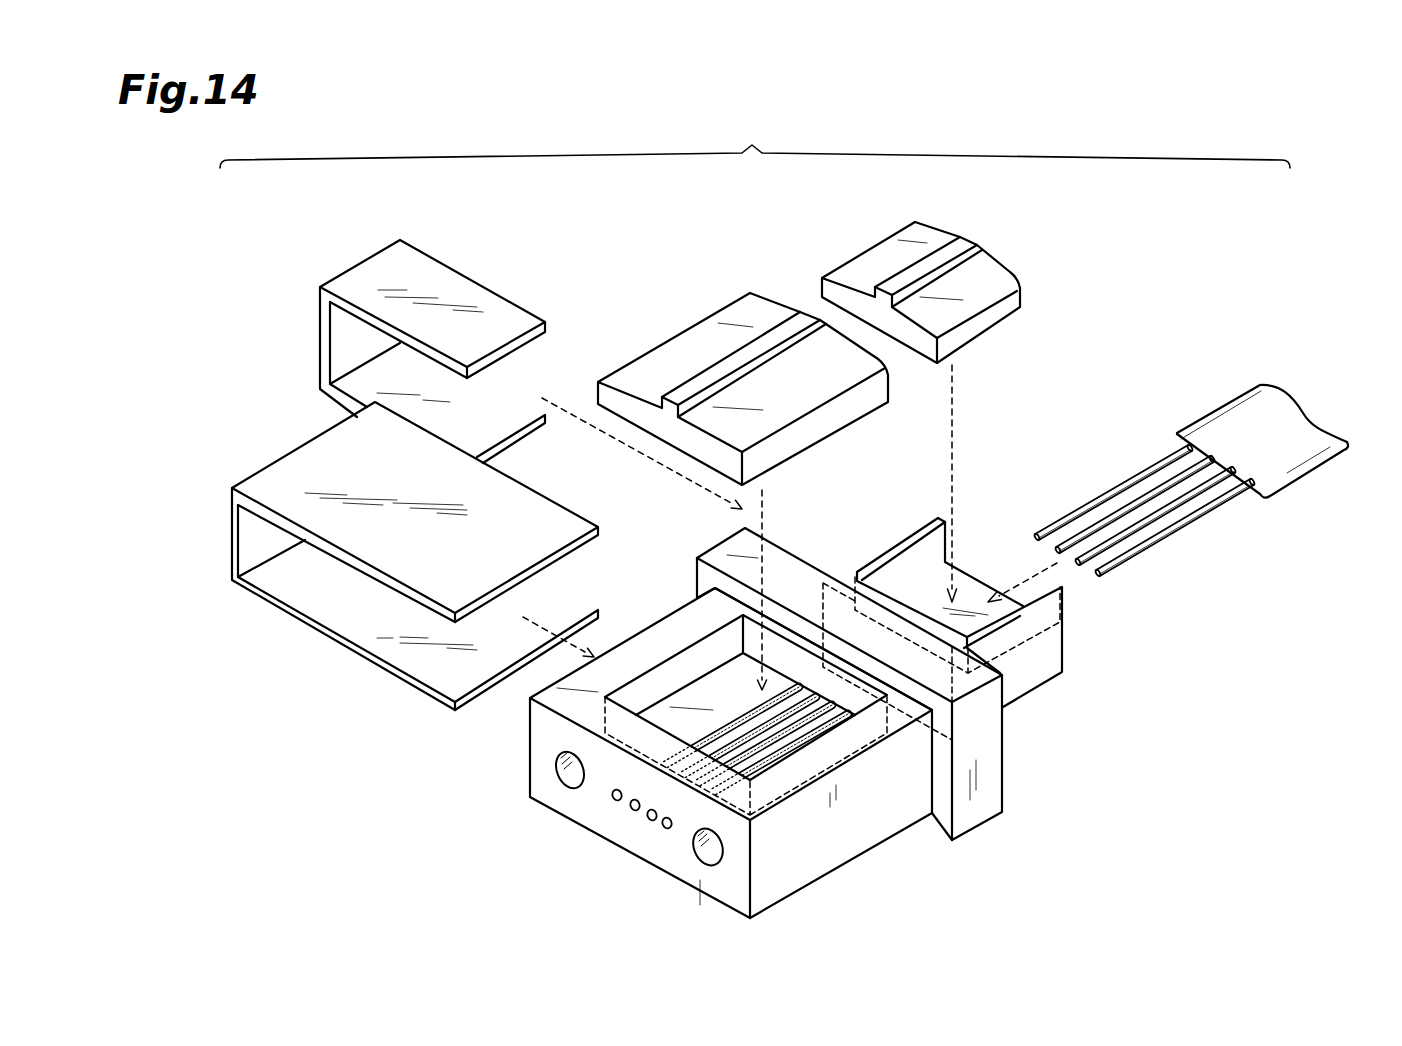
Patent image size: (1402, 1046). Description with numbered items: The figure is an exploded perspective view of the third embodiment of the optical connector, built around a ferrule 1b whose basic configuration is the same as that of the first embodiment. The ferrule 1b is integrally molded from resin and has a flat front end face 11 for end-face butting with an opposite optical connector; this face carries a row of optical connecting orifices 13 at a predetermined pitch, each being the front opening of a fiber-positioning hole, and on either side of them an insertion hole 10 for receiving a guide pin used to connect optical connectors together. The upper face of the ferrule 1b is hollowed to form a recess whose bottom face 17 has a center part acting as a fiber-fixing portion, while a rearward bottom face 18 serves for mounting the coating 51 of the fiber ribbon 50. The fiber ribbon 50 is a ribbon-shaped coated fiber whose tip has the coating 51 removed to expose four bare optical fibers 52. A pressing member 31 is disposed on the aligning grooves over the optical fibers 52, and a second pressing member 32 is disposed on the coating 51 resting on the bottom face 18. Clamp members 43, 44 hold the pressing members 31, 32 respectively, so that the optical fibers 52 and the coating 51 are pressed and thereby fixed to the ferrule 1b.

The ferrule 1b is at (927, 655).
The insertion hole 10 is at (707, 858).
The front end face 11 is at (741, 748).
The optical connecting orifices 13 is at (612, 798).
The bottom face 17 is at (685, 697).
The bottom face 18 is at (970, 586).
The pressing member 31 is at (668, 350).
The pressing member 32 is at (872, 255).
The clamp member 43 is at (287, 461).
The clamp member 44 is at (362, 268).
The fiber ribbon 50 is at (1212, 439).
The coating 51 is at (1300, 447).
The optical fibers 52 is at (1213, 507).